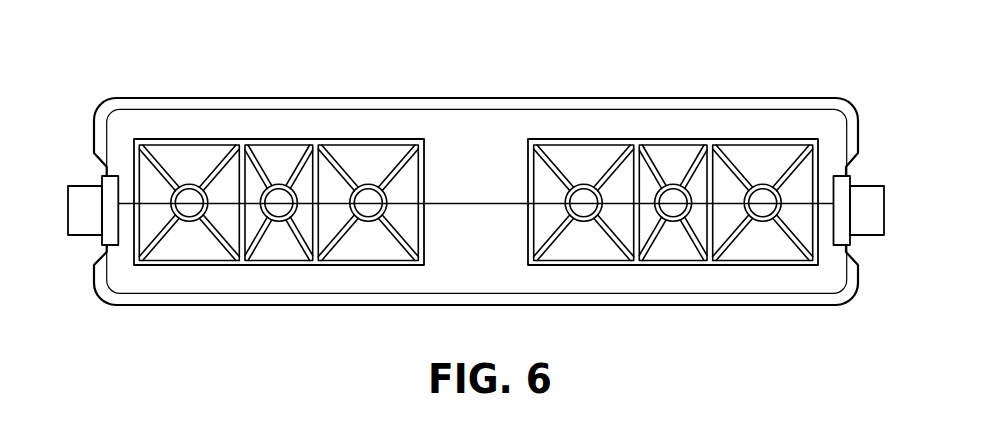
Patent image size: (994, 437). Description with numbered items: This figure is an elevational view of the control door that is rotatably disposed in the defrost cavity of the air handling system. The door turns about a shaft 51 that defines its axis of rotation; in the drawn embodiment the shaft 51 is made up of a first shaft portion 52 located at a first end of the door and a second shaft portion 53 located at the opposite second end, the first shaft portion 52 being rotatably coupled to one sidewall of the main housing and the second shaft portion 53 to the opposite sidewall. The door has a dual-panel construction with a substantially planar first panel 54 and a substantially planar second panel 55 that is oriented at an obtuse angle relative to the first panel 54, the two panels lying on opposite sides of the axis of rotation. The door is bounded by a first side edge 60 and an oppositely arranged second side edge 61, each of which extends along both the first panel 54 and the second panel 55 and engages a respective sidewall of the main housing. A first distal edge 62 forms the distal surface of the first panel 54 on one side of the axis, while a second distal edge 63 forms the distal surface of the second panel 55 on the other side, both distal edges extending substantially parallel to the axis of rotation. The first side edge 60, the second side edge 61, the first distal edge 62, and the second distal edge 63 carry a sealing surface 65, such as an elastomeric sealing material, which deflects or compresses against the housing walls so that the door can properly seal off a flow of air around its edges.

The shaft 51 is at (65, 173).
The first shaft portion 52 is at (83, 228).
The second shaft portion 53 is at (867, 228).
The first panel 54 is at (122, 280).
The second panel 55 is at (126, 128).
The first side edge 60 is at (93, 116).
The second side edge 61 is at (861, 115).
The first distal edge 62 is at (283, 307).
The second distal edge 63 is at (246, 95).
The sealing surface 65 is at (317, 106).